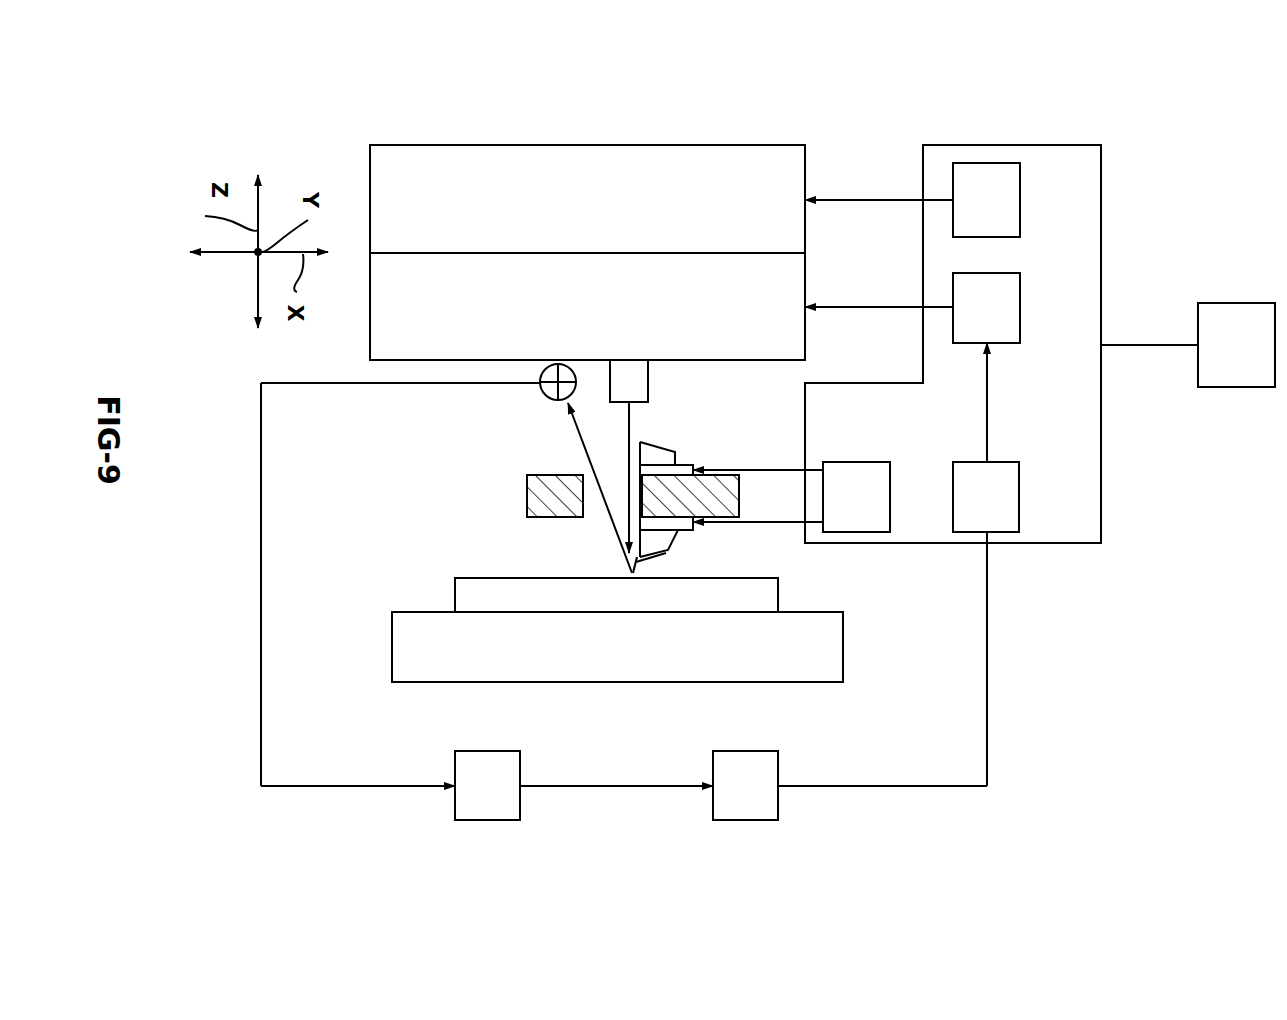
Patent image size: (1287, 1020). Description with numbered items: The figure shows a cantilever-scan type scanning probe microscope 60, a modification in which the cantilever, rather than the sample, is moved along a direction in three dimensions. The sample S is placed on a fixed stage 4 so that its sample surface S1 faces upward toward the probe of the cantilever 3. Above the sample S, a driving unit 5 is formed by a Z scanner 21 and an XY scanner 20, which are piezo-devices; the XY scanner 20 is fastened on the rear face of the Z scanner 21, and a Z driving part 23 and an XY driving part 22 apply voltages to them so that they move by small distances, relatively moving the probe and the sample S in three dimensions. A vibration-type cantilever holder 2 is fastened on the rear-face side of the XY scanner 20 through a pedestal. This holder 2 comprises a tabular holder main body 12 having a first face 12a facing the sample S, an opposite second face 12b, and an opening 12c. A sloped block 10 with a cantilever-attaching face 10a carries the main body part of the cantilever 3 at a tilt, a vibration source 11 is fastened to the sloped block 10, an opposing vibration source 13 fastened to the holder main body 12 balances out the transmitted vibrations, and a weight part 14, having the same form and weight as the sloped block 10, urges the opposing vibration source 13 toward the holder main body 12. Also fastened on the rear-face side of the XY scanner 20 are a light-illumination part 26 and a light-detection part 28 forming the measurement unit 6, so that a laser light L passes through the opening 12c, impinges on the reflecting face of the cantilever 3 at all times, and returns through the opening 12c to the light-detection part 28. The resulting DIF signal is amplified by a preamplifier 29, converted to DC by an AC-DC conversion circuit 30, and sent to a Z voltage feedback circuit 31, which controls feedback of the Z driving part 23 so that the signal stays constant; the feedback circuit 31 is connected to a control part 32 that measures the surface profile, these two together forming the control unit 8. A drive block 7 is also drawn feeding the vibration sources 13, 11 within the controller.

The scanning probe microscope 60 is at (1175, 83).
The driving unit 5 is at (738, 120).
The Z scanner 21 is at (805, 168).
The XY scanner 20 is at (805, 273).
The control unit 8 is at (1175, 237).
The Z driving part 23 is at (1020, 200).
The XY driving part 22 is at (1020, 310).
The control part 32 is at (1238, 305).
The drive unit 7 is at (857, 465).
The Z voltage feedback circuit 31 is at (1019, 497).
The preamplifier 29 is at (487, 815).
The AC-DC conversion circuit 30 is at (745, 815).
The light-detection part 28 is at (541, 393).
The measurement unit 6 is at (452, 417).
The light-illumination part 26 is at (648, 380).
The laser light L is at (629, 441).
The holder main body 12 is at (527, 495).
The first face 12a is at (548, 518).
The second face 12b is at (548, 475).
The opening 12c is at (587, 517).
The vibration-type cantilever holder 2 is at (742, 495).
The weight part 14 is at (657, 450).
The opposing vibration source 13 is at (680, 465).
The vibration source 11 is at (687, 526).
The sloped block 10 is at (678, 536).
The cantilever-attaching face 10a is at (670, 542).
The cantilever 3 is at (652, 556).
The sample S is at (455, 596).
The sample surface S1 is at (455, 578).
The stage 4 is at (392, 645).